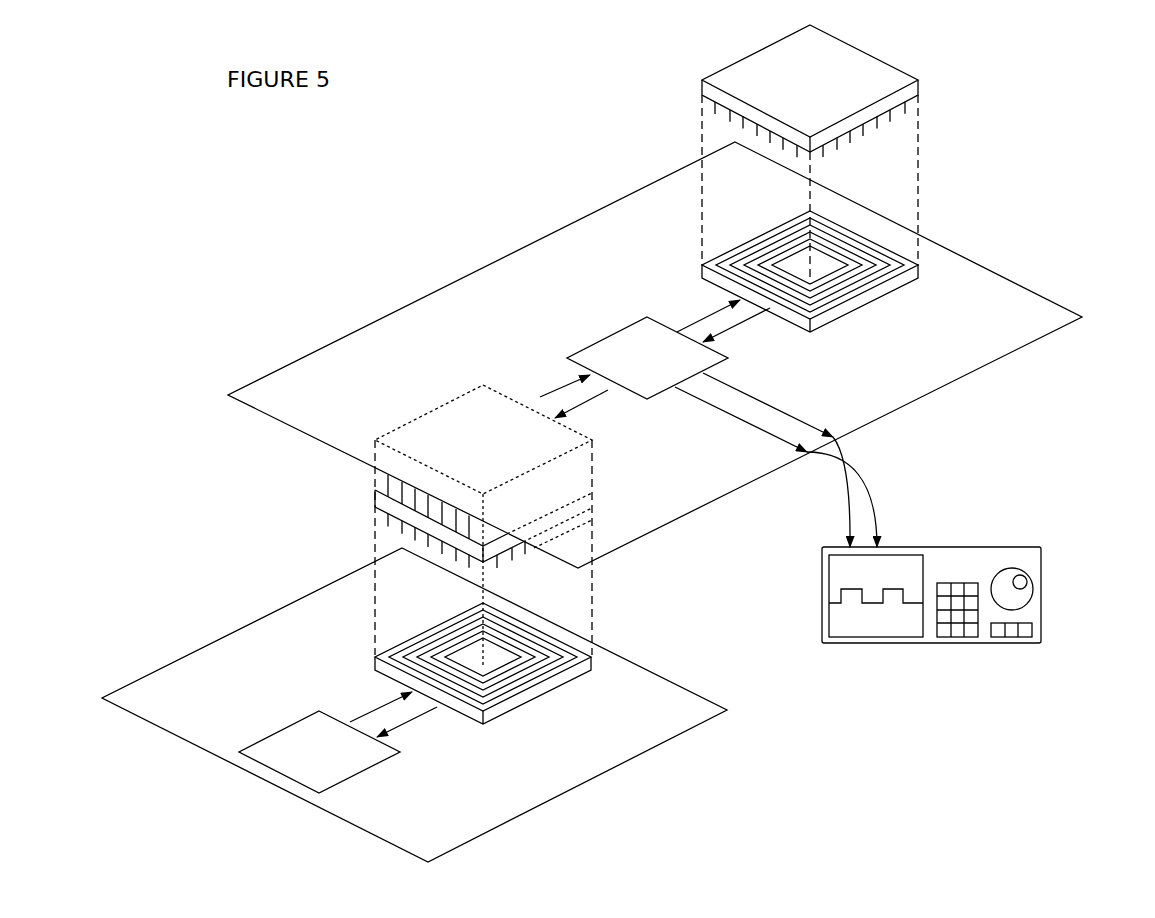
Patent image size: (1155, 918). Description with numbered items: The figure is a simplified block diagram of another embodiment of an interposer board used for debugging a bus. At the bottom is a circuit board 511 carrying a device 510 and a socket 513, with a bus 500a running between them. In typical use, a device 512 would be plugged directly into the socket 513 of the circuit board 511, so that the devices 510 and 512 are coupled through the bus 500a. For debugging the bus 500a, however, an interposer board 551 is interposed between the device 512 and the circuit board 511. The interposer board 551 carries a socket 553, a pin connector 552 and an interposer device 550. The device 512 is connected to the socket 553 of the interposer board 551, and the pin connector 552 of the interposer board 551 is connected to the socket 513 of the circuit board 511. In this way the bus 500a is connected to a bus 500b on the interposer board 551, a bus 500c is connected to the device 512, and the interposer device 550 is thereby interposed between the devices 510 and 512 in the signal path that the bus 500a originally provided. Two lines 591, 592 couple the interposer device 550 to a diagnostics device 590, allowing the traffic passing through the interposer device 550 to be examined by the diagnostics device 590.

The bus 500a is at (402, 723).
The bus 500b is at (584, 405).
The bus 500c is at (725, 332).
The device 510 is at (281, 744).
The circuit board 511 is at (657, 698).
The device 512 is at (857, 60).
The socket 513 is at (567, 652).
The interposer device 550 is at (608, 347).
The interposer board 551 is at (1013, 305).
The pin connector 552 is at (390, 508).
The socket 553 is at (892, 262).
The diagnostics device 590 is at (970, 547).
The line 591 is at (858, 452).
The line 592 is at (877, 493).